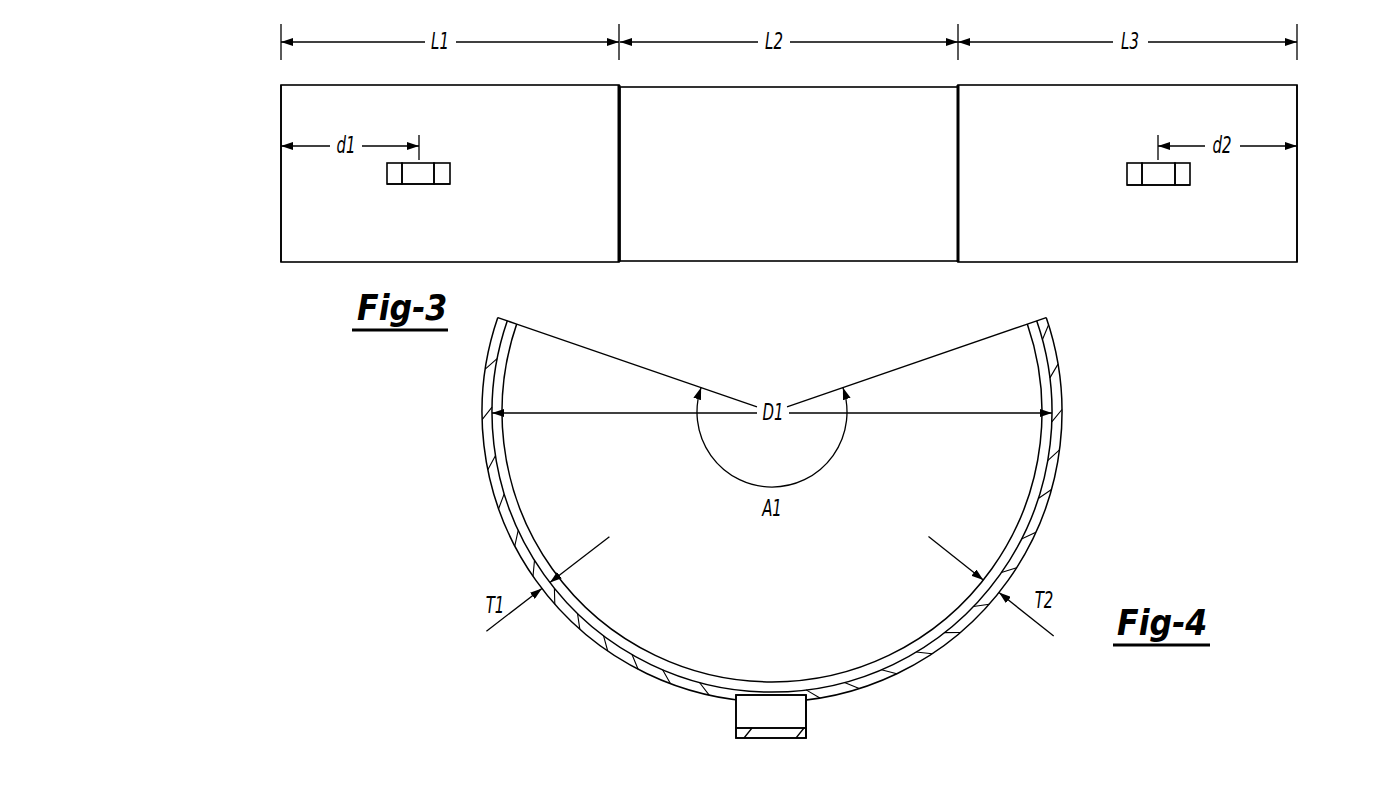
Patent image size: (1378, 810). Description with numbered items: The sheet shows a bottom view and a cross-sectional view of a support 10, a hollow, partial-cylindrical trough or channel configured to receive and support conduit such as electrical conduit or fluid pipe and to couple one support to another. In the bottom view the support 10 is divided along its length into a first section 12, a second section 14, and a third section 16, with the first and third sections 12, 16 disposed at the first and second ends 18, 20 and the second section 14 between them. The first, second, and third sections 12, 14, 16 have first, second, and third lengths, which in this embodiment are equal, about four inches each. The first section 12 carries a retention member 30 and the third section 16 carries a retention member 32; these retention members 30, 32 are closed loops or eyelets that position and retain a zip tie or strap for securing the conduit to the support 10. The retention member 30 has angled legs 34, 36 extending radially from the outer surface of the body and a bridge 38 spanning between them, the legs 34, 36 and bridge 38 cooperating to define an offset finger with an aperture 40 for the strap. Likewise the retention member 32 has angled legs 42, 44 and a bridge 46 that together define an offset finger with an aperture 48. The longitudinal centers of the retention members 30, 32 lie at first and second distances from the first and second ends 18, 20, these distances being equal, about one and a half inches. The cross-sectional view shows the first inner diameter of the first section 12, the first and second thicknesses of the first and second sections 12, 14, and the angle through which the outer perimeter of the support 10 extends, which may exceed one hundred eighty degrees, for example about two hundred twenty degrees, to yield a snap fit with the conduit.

In FIG. 3, the support 10 is at (272, 108).
In FIG. 4, the support 10 is at (1067, 382).
In FIG. 3, the first section 12 is at (470, 92).
In FIG. 3, the second section 14 is at (748, 97).
In FIG. 3, the third section 16 is at (1118, 92).
In FIG. 3, the first end 18 is at (280, 173).
In FIG. 3, the second end 20 is at (1298, 181).
In FIG. 3, the retention member 30 is at (441, 160).
In FIG. 4, the retention member 30 is at (736, 731).
In FIG. 3, the retention member 32 is at (1135, 160).
In FIG. 3, the angled leg 34 is at (387, 182).
In FIG. 3, the angled leg 36 is at (447, 175).
In FIG. 4, the angled leg 36 is at (784, 723).
In FIG. 3, the bridge 38 is at (428, 170).
In FIG. 4, the bridge 38 is at (782, 738).
In FIG. 3, the aperture 40 is at (419, 187).
In FIG. 4, the aperture 40 is at (808, 712).
In FIG. 3, the angled leg 42 is at (1130, 176).
In FIG. 3, the angled leg 44 is at (1187, 176).
In FIG. 3, the bridge 46 is at (1150, 170).
In FIG. 3, the aperture 48 is at (1158, 188).